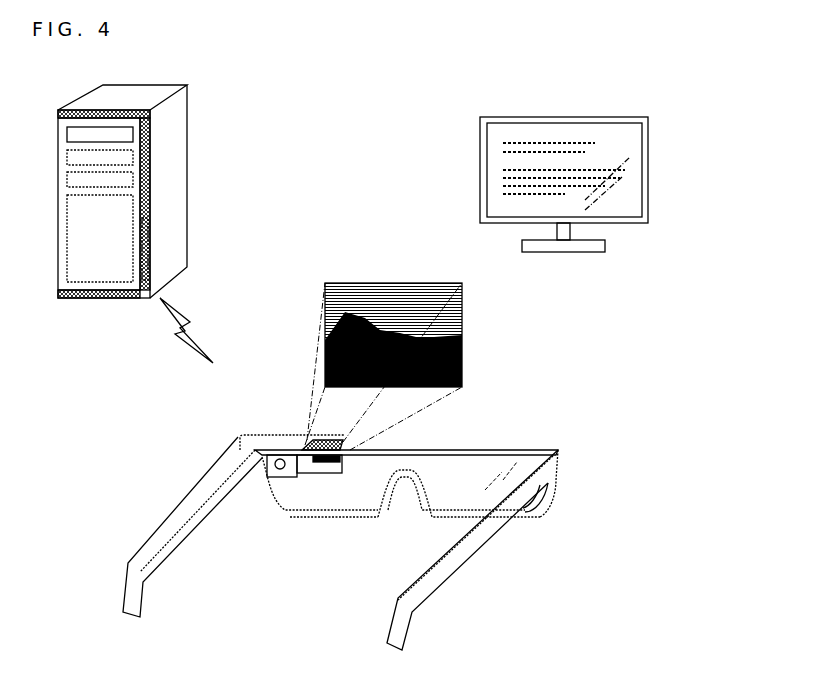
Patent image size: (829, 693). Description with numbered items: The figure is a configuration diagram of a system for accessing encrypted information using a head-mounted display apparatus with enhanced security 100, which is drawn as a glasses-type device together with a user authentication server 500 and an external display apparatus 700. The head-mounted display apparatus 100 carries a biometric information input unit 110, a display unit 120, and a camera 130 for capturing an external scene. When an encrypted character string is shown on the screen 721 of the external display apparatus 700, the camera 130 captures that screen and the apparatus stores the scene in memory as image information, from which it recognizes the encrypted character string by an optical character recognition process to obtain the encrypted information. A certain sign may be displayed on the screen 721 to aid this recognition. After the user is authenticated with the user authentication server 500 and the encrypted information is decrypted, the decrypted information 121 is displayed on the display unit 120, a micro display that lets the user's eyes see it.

The head-mounted display apparatus with enhanced security 100 is at (348, 466).
The biometric information input unit 110 is at (274, 470).
The display unit 120 is at (312, 473).
The decrypted information 121 is at (350, 447).
The camera 130 is at (276, 450).
The user authentication server 500 is at (187, 88).
The external display apparatus 700 is at (603, 184).
The screen 721 is at (623, 137).